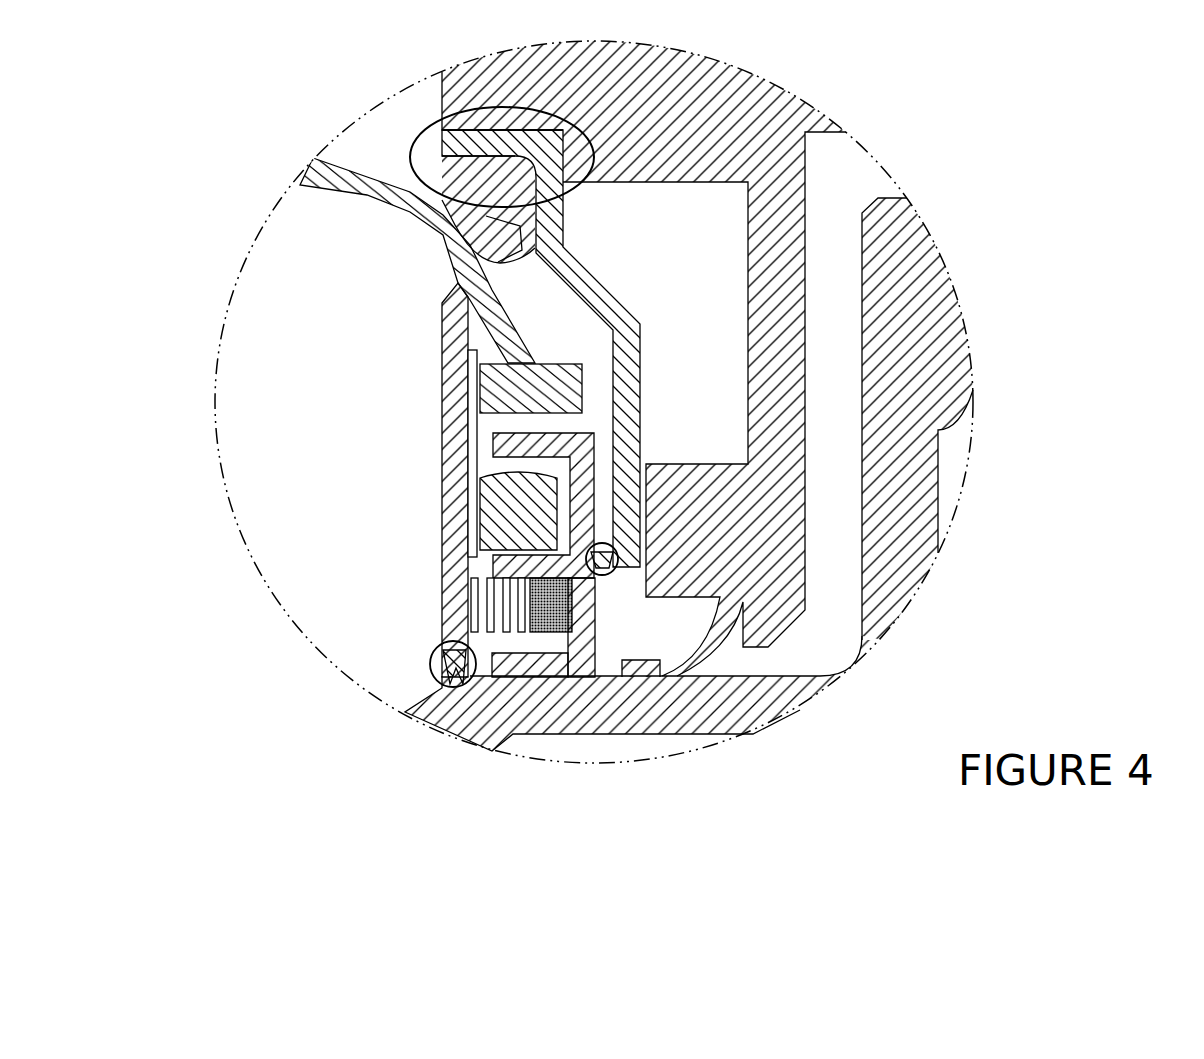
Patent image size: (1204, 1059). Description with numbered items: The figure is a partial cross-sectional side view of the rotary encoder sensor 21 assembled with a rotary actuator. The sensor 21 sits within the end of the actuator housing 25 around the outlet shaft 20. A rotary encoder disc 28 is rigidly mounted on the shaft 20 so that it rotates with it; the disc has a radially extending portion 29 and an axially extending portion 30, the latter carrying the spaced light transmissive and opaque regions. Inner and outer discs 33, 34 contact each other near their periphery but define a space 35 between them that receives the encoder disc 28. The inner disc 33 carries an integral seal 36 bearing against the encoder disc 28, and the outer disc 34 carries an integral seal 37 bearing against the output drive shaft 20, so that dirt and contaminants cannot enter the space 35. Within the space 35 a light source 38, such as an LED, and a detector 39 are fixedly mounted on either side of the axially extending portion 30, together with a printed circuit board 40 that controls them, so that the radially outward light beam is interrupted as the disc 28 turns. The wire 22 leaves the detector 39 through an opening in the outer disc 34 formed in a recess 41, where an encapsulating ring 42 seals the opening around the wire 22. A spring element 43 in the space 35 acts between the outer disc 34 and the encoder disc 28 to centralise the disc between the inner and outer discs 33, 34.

The outlet shaft 20 is at (547, 715).
The sensor 21 is at (599, 482).
The wire 22 is at (352, 188).
The housing 25 is at (758, 92).
The rotary encoder disc 28 is at (585, 662).
The radially extending portion 29 is at (587, 625).
The axially extending portion 30 is at (498, 445).
The inner disc 33 is at (633, 357).
The outer disc 34 is at (453, 333).
The space 35 is at (582, 348).
The integral seal 36 is at (608, 572).
The integral seal 37 is at (438, 668).
The light source 38 is at (500, 512).
The detector 39 is at (572, 393).
The printed circuit board 40 is at (457, 275).
The recess 41 is at (465, 208).
The encapsulating ring 42 is at (490, 228).
The spring element 43 is at (495, 605).